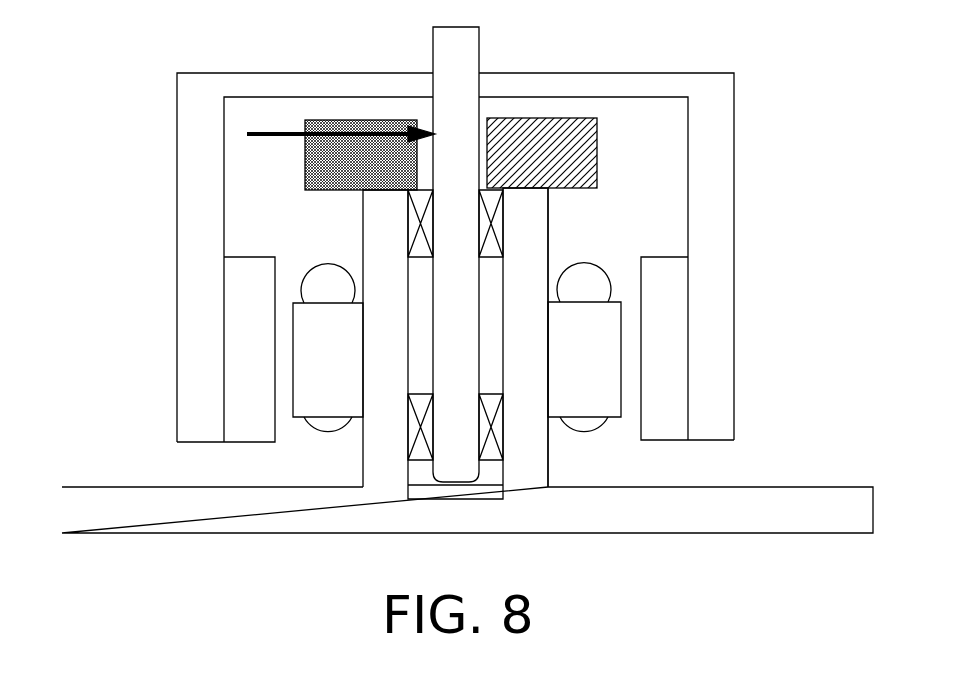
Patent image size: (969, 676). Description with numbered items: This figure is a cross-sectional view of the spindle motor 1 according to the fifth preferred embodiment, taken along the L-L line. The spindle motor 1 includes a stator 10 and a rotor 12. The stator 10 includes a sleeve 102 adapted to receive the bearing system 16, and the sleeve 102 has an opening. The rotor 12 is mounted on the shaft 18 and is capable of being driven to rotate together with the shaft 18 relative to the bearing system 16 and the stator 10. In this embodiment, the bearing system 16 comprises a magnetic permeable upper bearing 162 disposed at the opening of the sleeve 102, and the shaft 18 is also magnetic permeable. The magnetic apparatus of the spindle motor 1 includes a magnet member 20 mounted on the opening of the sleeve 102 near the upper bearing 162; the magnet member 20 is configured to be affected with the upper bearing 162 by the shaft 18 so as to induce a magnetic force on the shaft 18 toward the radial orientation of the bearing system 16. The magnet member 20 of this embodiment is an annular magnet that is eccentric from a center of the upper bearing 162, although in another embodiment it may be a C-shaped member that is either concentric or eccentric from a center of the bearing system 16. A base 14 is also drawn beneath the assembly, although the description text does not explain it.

The spindle motor 1 is at (805, 148).
The stator 10 is at (545, 251).
The rotor 12 is at (177, 202).
The base 14 is at (126, 487).
The bearing system 16 is at (398, 358).
The shaft 18 is at (432, 60).
The magnet member 20 is at (597, 152).
The sleeve 102 is at (503, 365).
The upper bearing 162 is at (406, 248).